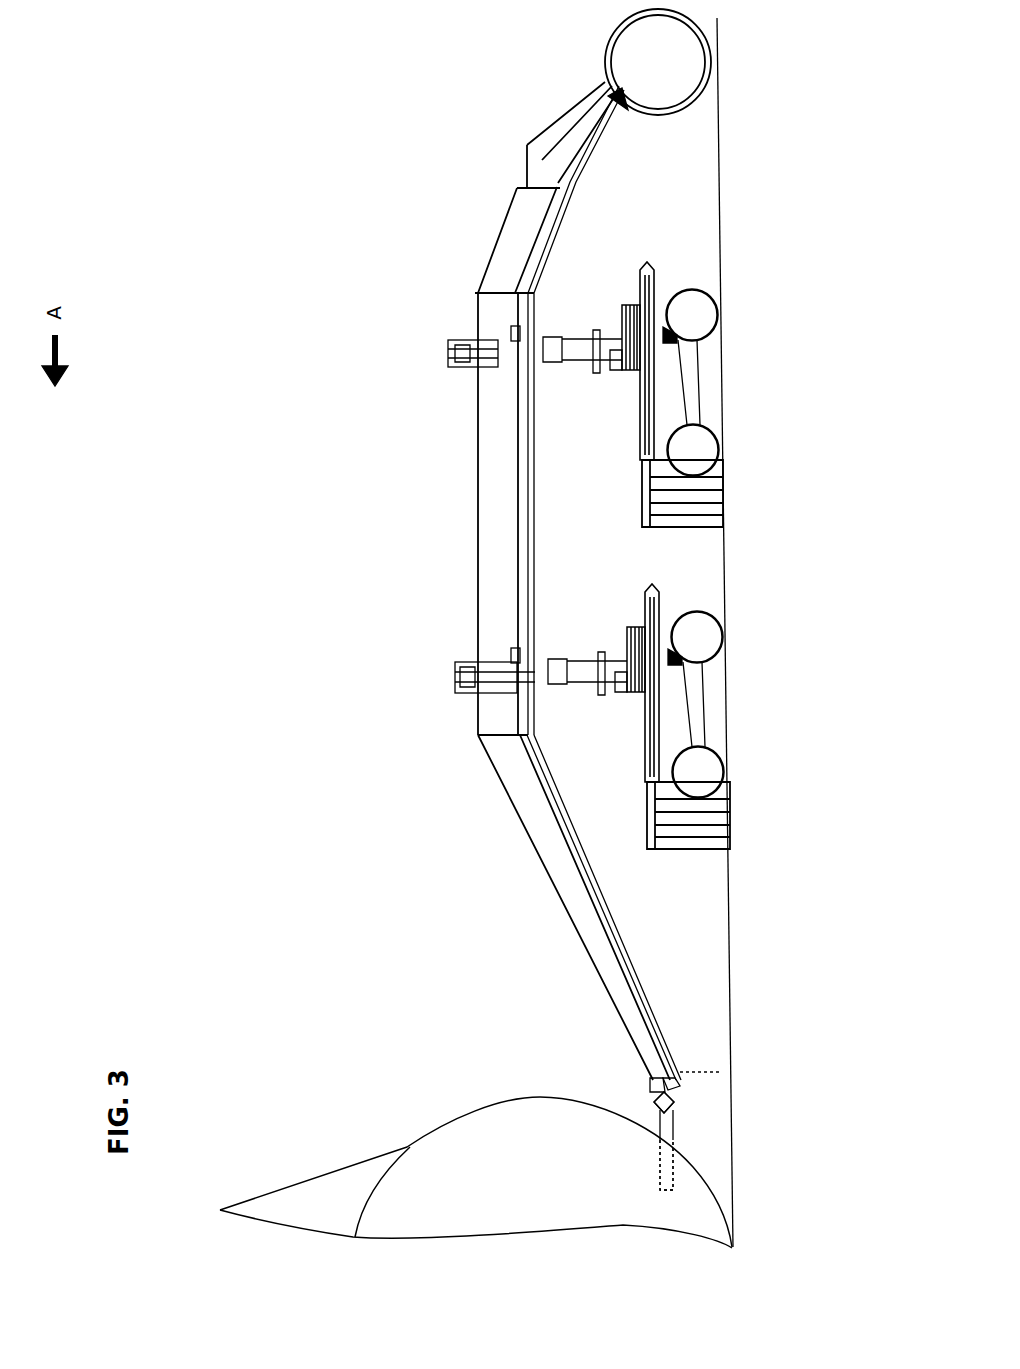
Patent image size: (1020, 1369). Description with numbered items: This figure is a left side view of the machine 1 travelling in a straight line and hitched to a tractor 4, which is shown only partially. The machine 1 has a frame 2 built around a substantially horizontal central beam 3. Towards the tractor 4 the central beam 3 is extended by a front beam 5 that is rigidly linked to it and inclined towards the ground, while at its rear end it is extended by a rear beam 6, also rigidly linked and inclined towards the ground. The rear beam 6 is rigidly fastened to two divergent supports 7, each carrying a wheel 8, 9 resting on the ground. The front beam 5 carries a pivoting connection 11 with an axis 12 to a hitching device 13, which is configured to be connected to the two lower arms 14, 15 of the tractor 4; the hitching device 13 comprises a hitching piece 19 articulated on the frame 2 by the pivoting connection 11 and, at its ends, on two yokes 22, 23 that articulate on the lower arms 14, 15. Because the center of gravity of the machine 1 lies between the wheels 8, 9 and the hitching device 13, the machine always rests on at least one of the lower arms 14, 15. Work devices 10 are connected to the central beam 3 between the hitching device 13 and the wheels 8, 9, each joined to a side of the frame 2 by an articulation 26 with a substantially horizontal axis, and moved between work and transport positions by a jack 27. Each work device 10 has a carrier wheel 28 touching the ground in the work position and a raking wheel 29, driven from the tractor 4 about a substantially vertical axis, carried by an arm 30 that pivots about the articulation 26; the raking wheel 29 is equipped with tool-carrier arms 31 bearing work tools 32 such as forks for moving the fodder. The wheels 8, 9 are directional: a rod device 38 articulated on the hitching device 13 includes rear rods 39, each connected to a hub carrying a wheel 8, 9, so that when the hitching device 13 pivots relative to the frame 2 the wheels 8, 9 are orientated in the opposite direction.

The machine 1 is at (442, 337).
The frame 2 is at (478, 590).
The central beam 3 is at (497, 490).
The tractor 4 is at (362, 1155).
The front beam 5 is at (538, 815).
The rear beam 6 is at (508, 248).
The divergent support 7 is at (568, 135).
The wheel 8 is at (640, 55).
The wheel 9 is at (619, 62).
The work device 10 is at (658, 262).
The pivoting connection 11 is at (652, 1082).
The axis 12 is at (702, 1076).
The hitching device 13 is at (690, 1087).
The lower arm 14 is at (658, 1180).
The lower arm 15 is at (625, 1168).
The hitching piece 19 is at (676, 1092).
The yoke 22 is at (672, 1104).
The yoke 23 is at (729, 1154).
The articulation 26 is at (515, 330).
The jack 27 is at (448, 366).
The carrier wheel 28 is at (693, 315).
The raking wheel 29 is at (628, 310).
The arm 30 is at (549, 364).
The tool-carrier arm 31 is at (640, 418).
The work tool 32 is at (710, 517).
The rod device 38 is at (622, 931).
The rear rod 39 is at (619, 106).